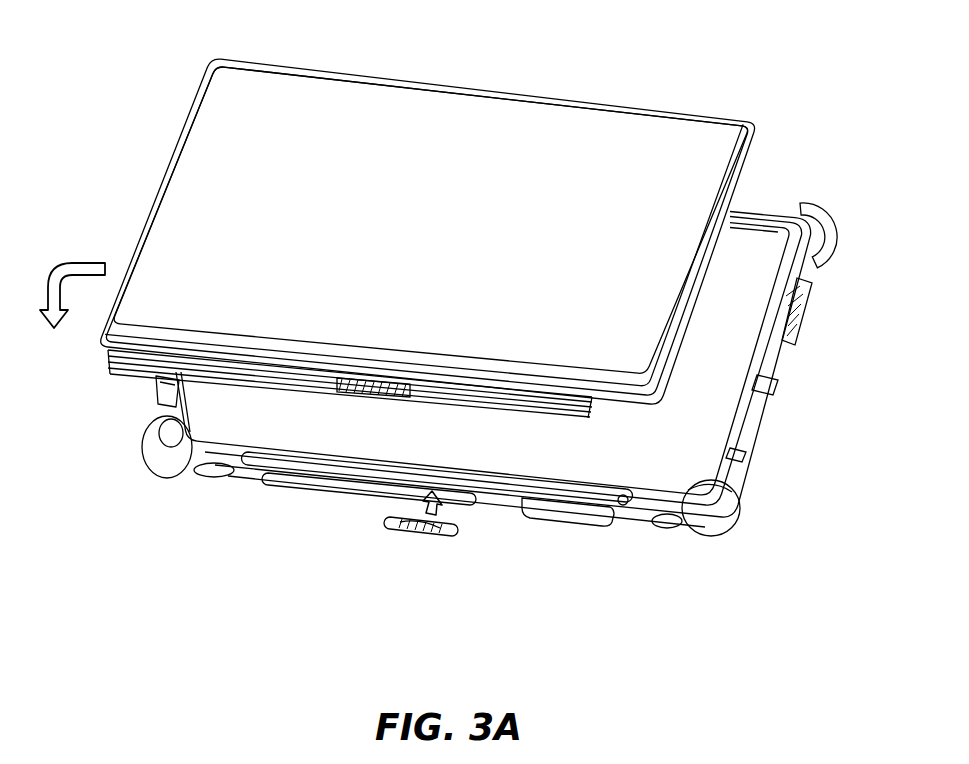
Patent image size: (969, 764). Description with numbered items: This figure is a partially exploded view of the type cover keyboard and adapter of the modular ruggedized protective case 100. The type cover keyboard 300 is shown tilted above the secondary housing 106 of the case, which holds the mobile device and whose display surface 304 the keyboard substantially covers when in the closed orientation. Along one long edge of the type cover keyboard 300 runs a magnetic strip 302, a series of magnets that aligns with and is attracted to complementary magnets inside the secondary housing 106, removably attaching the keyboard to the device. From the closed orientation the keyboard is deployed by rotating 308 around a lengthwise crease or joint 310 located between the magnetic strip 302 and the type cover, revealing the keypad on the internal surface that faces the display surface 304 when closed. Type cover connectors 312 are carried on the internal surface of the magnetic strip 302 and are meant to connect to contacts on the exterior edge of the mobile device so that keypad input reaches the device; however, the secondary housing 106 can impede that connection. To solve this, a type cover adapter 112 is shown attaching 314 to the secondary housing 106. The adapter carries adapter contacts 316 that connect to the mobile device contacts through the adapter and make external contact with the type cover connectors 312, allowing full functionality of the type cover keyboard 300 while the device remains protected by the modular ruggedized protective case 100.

The modular ruggedized protective case 100 is at (84, 52).
The secondary housing 106 is at (643, 505).
The type cover adapter 112 is at (413, 524).
The type cover keyboard 300 is at (503, 143).
The magnetic strip 302 is at (265, 382).
The display surface 304 is at (758, 252).
The rotating 308 is at (83, 266).
The lengthwise crease or joint 310 is at (162, 352).
The type cover connectors 312 is at (346, 386).
The attaching 314 is at (437, 507).
The adapter contacts 316 is at (403, 524).